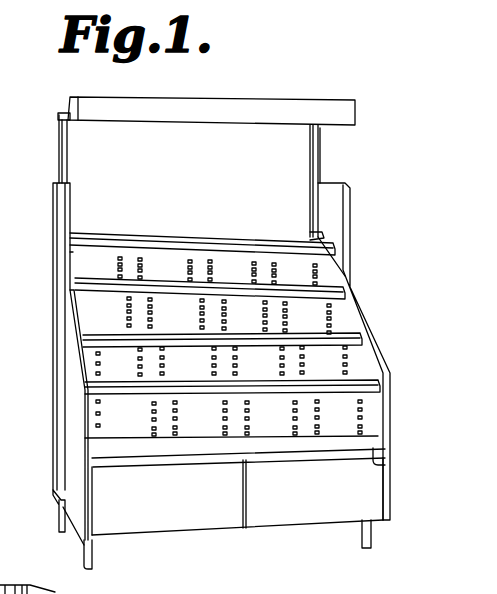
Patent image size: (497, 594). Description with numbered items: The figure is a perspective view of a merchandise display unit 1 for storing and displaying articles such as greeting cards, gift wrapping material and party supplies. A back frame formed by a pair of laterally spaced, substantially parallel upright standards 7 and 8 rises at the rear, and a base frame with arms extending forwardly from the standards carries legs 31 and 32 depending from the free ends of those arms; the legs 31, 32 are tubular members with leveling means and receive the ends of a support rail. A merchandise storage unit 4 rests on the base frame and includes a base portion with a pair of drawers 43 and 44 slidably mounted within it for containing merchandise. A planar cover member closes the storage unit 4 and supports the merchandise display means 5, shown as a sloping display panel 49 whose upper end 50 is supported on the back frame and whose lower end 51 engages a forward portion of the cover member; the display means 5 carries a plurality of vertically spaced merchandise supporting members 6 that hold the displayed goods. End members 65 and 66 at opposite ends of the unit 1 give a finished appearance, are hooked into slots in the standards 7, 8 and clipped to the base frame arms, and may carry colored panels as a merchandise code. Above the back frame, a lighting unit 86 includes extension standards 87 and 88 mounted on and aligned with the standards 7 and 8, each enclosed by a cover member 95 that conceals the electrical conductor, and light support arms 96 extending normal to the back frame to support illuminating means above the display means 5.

The merchandise display unit 1 is at (378, 268).
The merchandise storage unit 4 is at (335, 494).
The merchandise display means 5 is at (168, 266).
The merchandise supporting members 6 is at (220, 246).
The upright standard 7 is at (60, 520).
The upright standard 8 is at (318, 222).
The leg 31 is at (93, 560).
The leg 32 is at (372, 537).
The drawer 43 is at (177, 520).
The drawer 44 is at (297, 507).
The sloping display panel 49 is at (208, 425).
The upper end 50 is at (252, 233).
The lower end 51 is at (376, 460).
The end member 65 is at (54, 470).
The end member 66 is at (391, 363).
The lighting unit 86 is at (264, 92).
The extension standard 87 is at (66, 165).
The extension standard 88 is at (320, 152).
The cover member 95 is at (312, 160).
The light support arm 96 is at (64, 113).